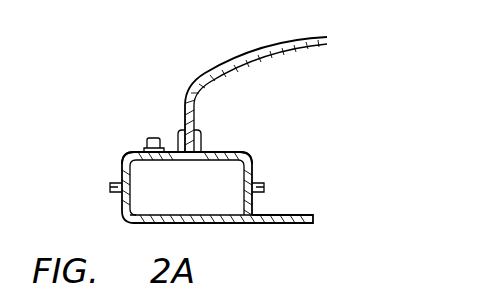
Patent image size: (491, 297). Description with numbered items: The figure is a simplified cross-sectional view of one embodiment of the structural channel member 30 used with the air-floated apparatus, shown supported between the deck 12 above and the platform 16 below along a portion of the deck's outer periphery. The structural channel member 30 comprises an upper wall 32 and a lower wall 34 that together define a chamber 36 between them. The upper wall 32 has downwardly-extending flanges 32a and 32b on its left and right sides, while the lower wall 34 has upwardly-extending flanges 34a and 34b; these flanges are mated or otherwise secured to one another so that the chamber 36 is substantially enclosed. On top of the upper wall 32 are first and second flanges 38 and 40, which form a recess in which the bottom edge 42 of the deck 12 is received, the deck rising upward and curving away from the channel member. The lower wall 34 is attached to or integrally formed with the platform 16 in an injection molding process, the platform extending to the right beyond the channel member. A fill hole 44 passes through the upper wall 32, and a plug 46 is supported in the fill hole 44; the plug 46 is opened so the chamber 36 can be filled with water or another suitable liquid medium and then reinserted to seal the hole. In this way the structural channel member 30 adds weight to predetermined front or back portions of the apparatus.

The deck 12 is at (247, 54).
The platform 16 is at (282, 224).
The structural channel member 30 is at (97, 118).
The upper wall 32 is at (240, 148).
The downwardly-extending flange 32a is at (122, 179).
The downwardly-extending flange 32b is at (254, 171).
The lower wall 34 is at (196, 204).
The upwardly-extending flange 34a is at (113, 194).
The upwardly-extending flange 34b is at (264, 192).
The chamber 36 is at (166, 197).
The first flange 38 is at (177, 136).
The second flange 40 is at (201, 141).
The bottom edge 42 is at (212, 189).
The fill hole 44 is at (144, 150).
The plug 46 is at (147, 141).